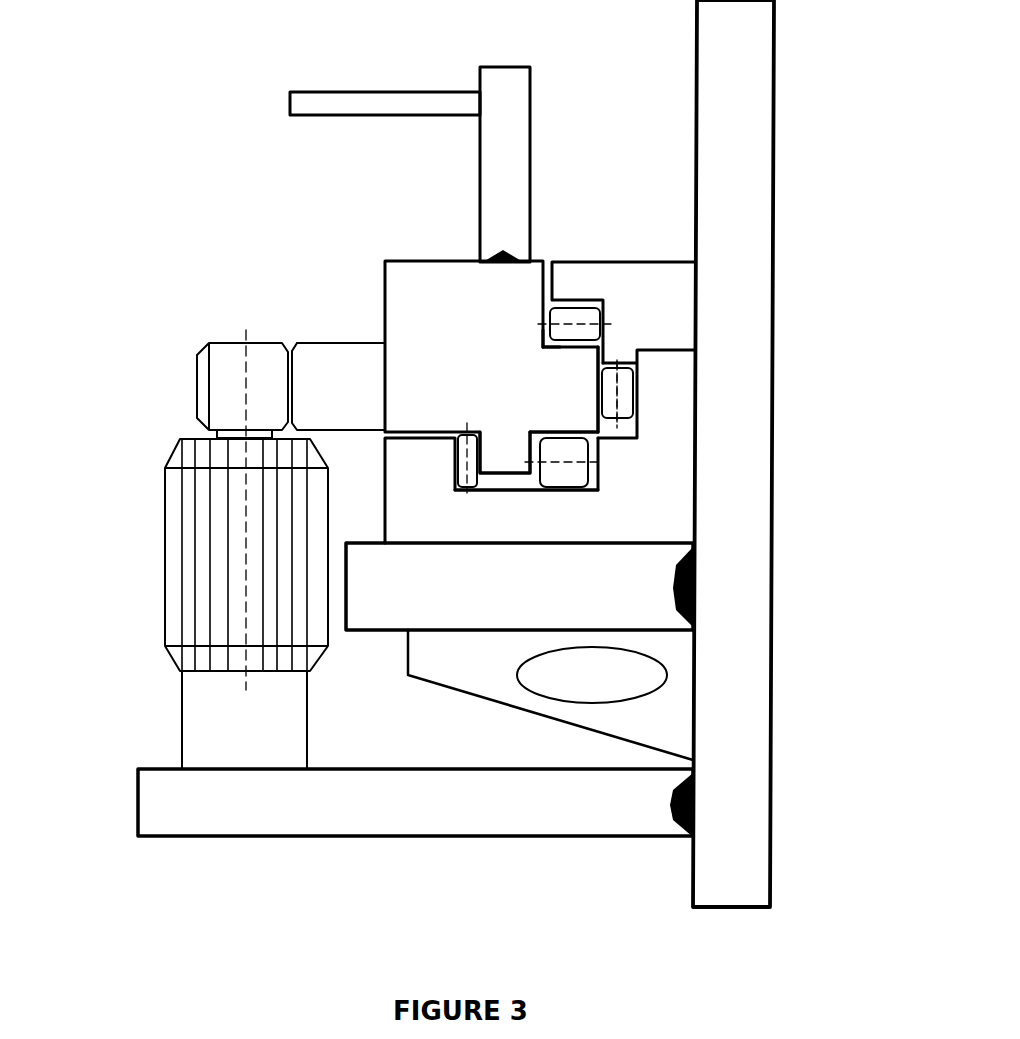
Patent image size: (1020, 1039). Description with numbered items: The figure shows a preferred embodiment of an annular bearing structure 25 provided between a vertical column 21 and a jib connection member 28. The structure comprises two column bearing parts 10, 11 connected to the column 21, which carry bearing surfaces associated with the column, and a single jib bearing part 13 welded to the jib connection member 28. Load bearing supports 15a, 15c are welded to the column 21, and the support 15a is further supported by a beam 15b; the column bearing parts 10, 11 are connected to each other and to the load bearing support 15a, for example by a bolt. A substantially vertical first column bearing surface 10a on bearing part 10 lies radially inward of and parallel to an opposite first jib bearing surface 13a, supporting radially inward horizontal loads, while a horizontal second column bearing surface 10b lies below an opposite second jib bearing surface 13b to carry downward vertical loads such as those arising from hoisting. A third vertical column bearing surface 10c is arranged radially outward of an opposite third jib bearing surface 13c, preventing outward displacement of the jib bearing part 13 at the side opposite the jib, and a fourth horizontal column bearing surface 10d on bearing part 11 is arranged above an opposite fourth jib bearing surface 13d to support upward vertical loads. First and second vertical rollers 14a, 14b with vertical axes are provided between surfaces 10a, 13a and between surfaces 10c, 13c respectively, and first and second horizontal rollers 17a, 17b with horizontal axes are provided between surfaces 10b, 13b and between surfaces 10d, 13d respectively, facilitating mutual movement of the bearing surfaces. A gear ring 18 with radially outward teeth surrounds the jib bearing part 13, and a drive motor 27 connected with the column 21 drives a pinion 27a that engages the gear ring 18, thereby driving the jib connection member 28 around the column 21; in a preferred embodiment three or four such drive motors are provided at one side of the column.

The annular bearing structure 25 is at (186, 130).
The jib connection member 28 is at (530, 82).
The column bearing part 11 is at (682, 262).
The fourth column bearing surface 10d is at (575, 300).
The jib bearing part 13 is at (383, 290).
The second vertical roller 14b is at (470, 432).
The gear ring 18 is at (338, 343).
The second horizontal roller 17b is at (605, 323).
The first column bearing surface 10a is at (680, 405).
The fourth jib bearing surface 13d is at (543, 345).
The column bearing part 10 is at (640, 385).
The pinion 27a is at (197, 383).
The third jib bearing surface 13c is at (492, 446).
The first jib bearing surface 13a is at (598, 415).
The second jib bearing surface 13b is at (560, 432).
The first vertical roller 14a is at (640, 410).
The third column bearing surface 10c is at (455, 462).
The first horizontal roller 17a is at (605, 463).
The load bearing support 15a is at (667, 543).
The second column bearing surface 10b is at (590, 497).
The vertical column 21 is at (775, 679).
The drive motor 27 is at (182, 722).
The beam 15b is at (447, 690).
The load bearing support 15c is at (390, 838).